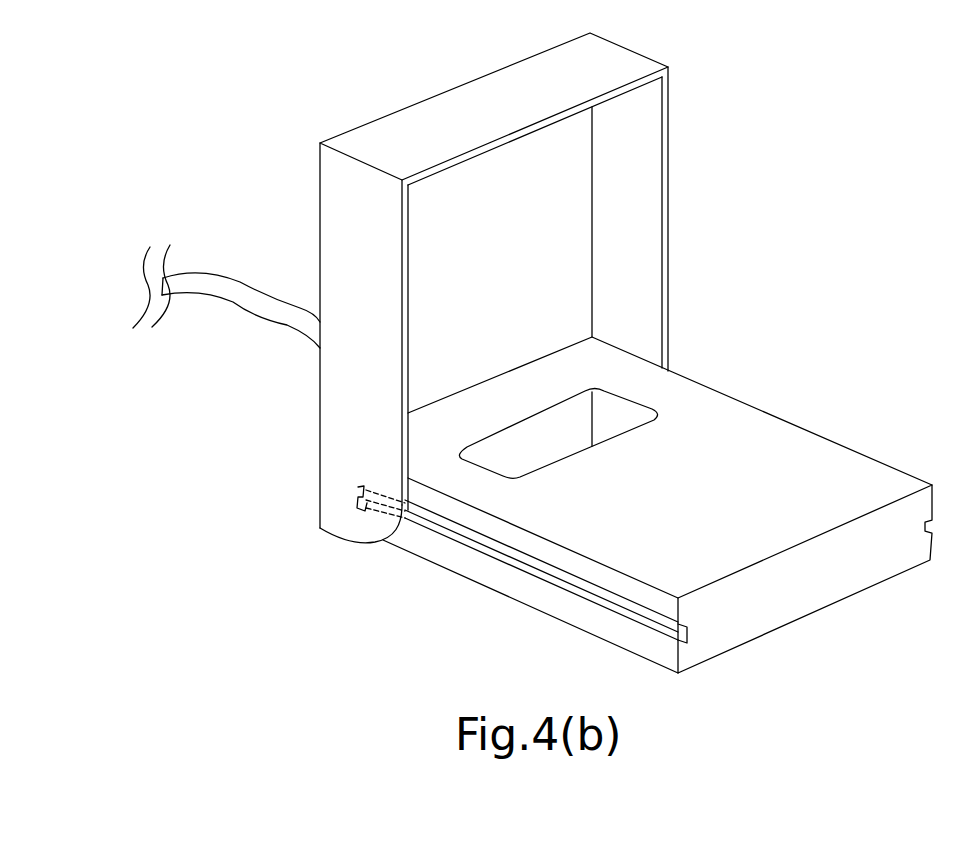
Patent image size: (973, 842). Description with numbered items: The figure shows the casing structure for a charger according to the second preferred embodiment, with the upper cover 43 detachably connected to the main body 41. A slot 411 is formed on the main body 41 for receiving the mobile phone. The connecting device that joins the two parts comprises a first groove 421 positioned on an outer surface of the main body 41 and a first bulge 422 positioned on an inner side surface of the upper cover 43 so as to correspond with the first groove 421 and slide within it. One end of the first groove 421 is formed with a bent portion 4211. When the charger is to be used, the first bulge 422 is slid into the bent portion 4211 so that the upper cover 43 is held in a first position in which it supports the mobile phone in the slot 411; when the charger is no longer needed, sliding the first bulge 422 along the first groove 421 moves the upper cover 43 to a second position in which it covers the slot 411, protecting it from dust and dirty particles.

The main body 41 is at (845, 473).
The slot 411 is at (620, 408).
The first groove 421 is at (528, 570).
The bent portion 4211 is at (365, 512).
The first bulge 422 is at (358, 488).
The upper cover 43 is at (667, 137).